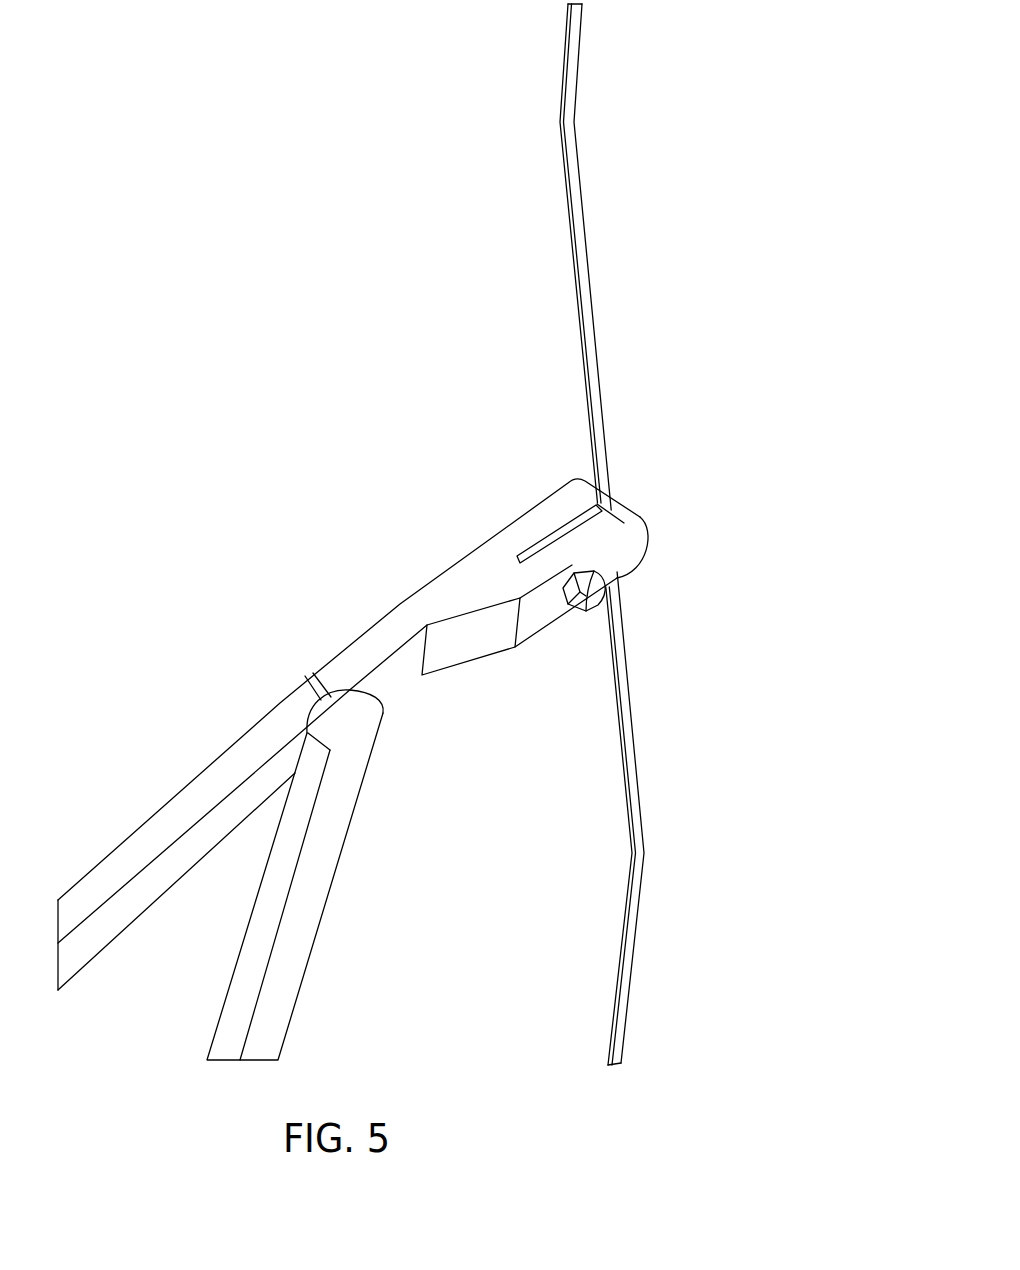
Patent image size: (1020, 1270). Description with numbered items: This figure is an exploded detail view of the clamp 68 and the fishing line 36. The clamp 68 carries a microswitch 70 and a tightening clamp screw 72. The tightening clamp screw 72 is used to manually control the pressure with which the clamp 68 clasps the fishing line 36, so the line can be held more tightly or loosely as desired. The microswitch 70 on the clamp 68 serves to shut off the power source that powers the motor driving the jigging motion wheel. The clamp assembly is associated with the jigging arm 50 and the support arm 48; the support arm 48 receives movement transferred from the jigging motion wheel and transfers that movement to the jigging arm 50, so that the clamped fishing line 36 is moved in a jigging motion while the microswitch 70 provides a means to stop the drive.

The fishing line 36 is at (596, 348).
The support arm 48 is at (326, 911).
The jigging arm 50 is at (380, 621).
The clamp 68 is at (527, 537).
The microswitch 70 is at (600, 502).
The tightening clamp screw 72 is at (604, 593).